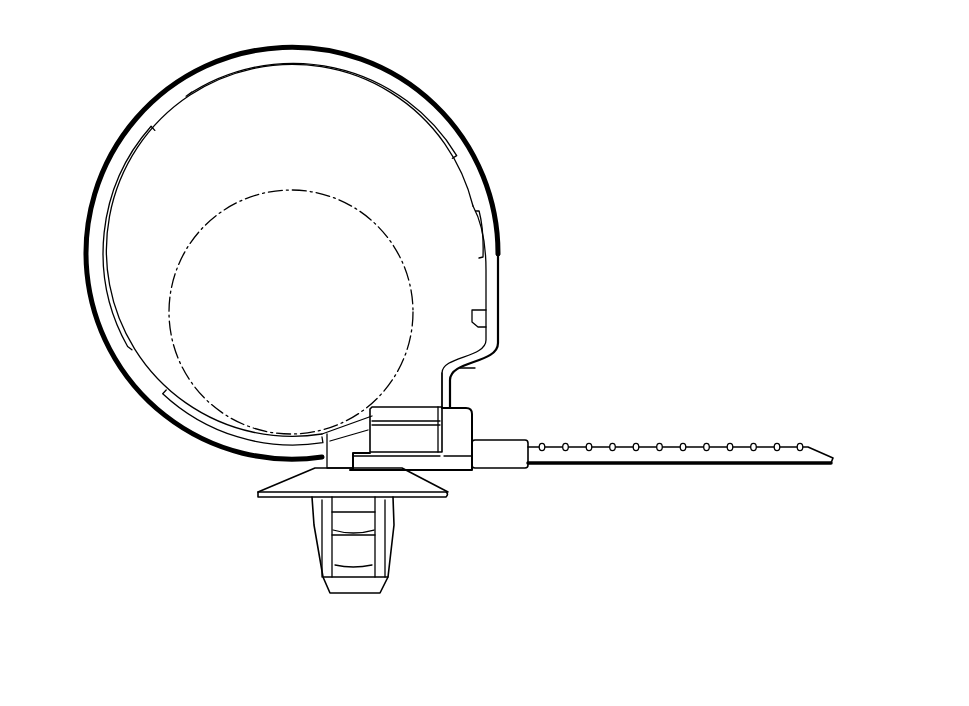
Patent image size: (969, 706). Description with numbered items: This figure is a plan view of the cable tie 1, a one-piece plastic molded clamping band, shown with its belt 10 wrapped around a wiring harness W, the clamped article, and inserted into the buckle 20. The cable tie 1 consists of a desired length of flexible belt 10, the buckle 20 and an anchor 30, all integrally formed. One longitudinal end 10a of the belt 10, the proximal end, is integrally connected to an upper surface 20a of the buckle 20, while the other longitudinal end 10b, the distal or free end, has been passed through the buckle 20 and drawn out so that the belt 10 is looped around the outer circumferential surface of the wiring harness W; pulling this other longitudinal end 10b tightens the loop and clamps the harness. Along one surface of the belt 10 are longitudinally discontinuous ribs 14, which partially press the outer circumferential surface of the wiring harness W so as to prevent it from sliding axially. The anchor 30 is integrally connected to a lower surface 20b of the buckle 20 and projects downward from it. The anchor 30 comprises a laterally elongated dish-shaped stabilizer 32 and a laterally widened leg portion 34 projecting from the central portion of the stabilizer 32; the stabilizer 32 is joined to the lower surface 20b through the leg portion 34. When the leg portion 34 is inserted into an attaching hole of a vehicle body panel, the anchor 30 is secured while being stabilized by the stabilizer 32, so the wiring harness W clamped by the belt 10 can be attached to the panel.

The cable tie 1 is at (590, 133).
The belt 10 is at (405, 90).
The one longitudinal end of the belt 10a is at (463, 394).
The other longitudinal end of the belt 10b is at (819, 445).
The ribs 14 is at (292, 70).
The buckle 20 is at (423, 439).
The upper surface of the buckle 20a is at (402, 398).
The lower surface of the buckle 20b is at (452, 482).
The anchor 30 is at (264, 532).
The stabilizer 32 is at (294, 481).
The leg portion 34 is at (322, 563).
The wiring harness W is at (340, 238).